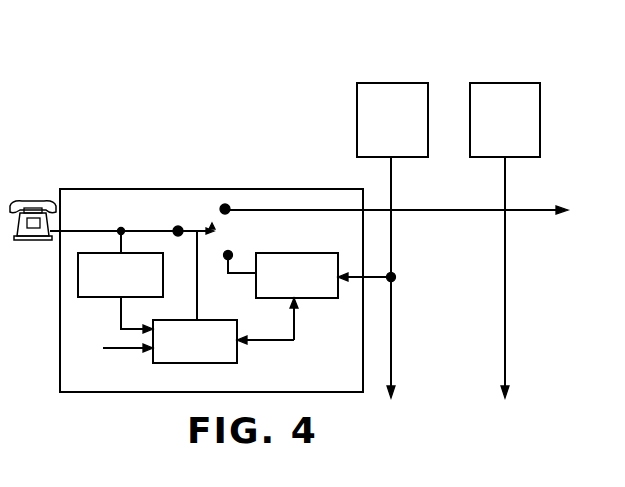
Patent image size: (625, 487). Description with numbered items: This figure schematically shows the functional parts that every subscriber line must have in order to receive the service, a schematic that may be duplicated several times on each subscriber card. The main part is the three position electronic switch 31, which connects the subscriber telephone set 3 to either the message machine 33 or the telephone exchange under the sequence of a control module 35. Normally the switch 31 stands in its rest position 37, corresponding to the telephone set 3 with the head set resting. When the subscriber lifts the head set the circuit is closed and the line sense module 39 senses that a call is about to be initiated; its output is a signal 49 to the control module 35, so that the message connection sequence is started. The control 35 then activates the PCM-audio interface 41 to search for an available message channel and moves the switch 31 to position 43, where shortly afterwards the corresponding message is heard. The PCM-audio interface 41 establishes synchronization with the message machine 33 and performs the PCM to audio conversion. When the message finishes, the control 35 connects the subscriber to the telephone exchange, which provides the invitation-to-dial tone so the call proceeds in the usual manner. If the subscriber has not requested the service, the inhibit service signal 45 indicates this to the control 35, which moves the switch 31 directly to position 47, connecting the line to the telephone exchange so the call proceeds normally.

The subscriber telephone set 3 is at (40, 200).
The three position electronic switch 31 is at (206, 220).
The message machine 33 is at (487, 83).
The control module 35 is at (220, 364).
The rest position 37 is at (206, 233).
The line sense module 39 is at (107, 298).
The PCM-audio interface 41 is at (320, 299).
The switch position for message 43 is at (198, 275).
The inhibit service signal 45 is at (131, 349).
The switch position for telephone exchange 47 is at (211, 203).
The signal to control module 49 is at (119, 322).